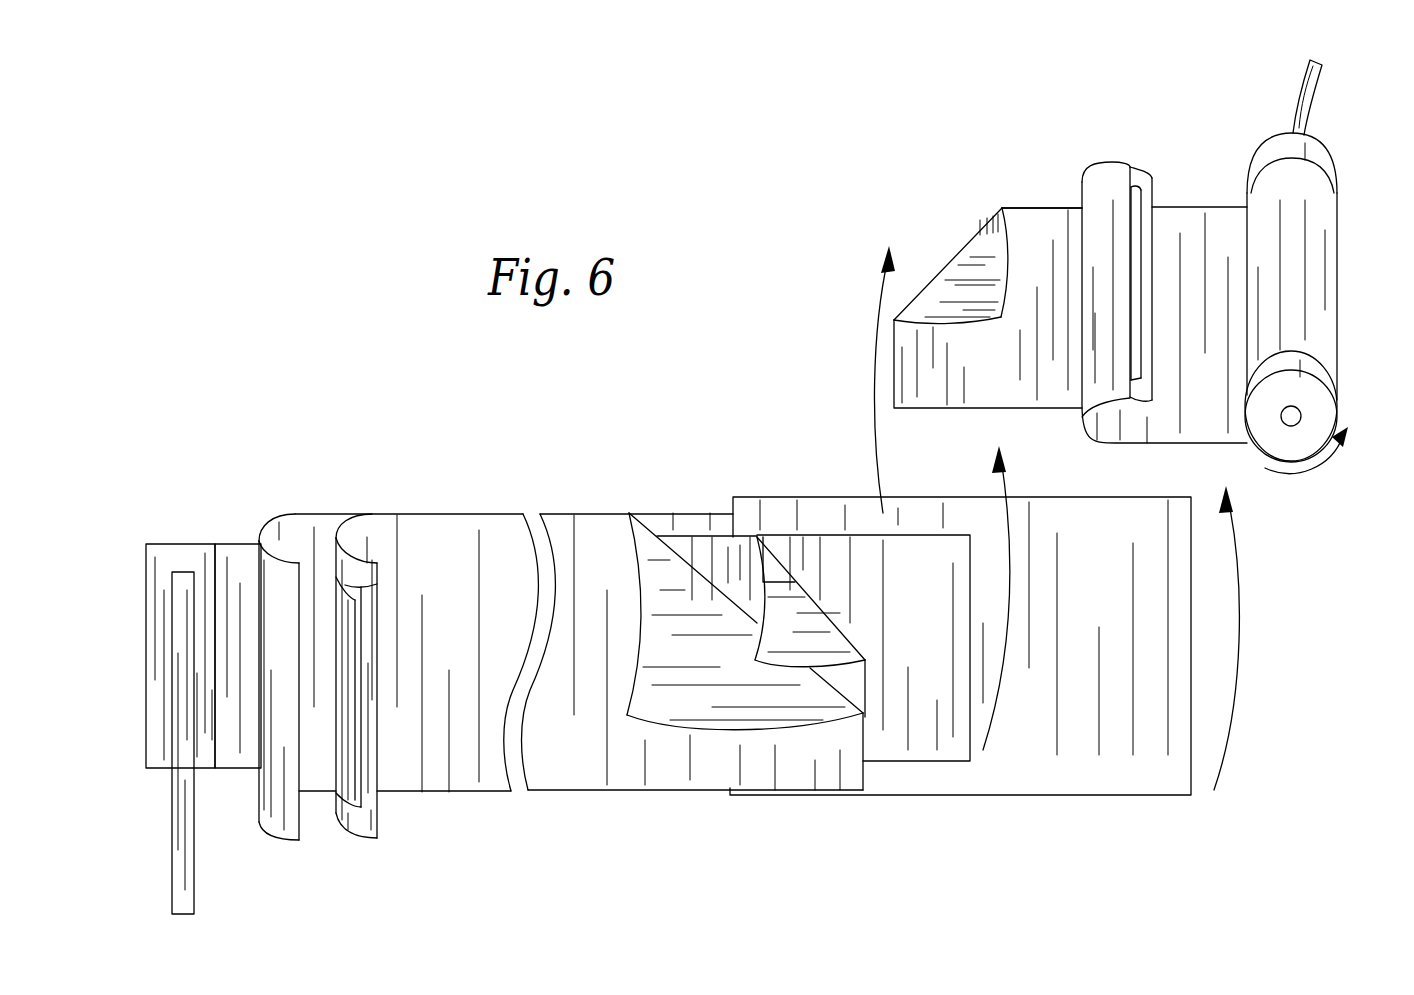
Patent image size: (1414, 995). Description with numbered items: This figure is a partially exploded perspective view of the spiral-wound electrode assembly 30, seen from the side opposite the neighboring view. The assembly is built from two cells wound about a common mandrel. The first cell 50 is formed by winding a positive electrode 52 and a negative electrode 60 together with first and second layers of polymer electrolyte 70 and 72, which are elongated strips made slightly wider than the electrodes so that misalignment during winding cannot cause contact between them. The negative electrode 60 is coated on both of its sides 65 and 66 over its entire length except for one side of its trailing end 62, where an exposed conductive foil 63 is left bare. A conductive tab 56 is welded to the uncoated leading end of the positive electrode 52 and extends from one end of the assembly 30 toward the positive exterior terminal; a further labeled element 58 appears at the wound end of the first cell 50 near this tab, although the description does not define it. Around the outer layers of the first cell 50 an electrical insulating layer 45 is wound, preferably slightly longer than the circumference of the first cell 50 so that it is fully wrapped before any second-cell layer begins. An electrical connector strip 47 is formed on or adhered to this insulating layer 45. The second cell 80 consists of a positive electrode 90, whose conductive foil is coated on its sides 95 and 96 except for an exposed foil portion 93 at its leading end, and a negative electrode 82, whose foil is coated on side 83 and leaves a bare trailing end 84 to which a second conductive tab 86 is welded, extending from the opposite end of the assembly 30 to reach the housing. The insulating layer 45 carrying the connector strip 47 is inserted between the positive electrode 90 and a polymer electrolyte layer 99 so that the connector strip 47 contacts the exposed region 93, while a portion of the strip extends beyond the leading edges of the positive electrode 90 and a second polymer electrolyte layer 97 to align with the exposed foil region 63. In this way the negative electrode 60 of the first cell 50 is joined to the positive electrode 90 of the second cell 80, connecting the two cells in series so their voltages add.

The spiral-wound electrode assembly 30 is at (1348, 79).
The electrical insulating layer 45 is at (1052, 797).
The electrical connector strip 47 is at (917, 740).
The first cell 50 is at (1203, 100).
The positive electrode 52 is at (1138, 232).
The conductive tab 56 is at (1307, 78).
The web end 58 is at (1150, 197).
The negative electrode 60 is at (1027, 208).
The trailing end 62 is at (942, 375).
The exposed conductive foil 63 is at (965, 287).
The side 65 is at (990, 235).
The side 66 is at (1060, 233).
The first layer of polymer electrolyte 70 is at (1142, 173).
The second layer of polymer electrolyte 72 is at (1107, 175).
The second cell 80 is at (572, 828).
The negative electrode 82 is at (230, 545).
The side 83 is at (238, 582).
The trailing end 84 is at (149, 570).
The second conductive tab 86 is at (172, 824).
The positive electrode 90 is at (359, 603).
The exposed foil portion 93 is at (820, 610).
The side 95 is at (770, 555).
The side 96 is at (720, 560).
The second polymer electrolyte layer 97 is at (372, 586).
The polymer electrolyte layer 99 is at (282, 532).